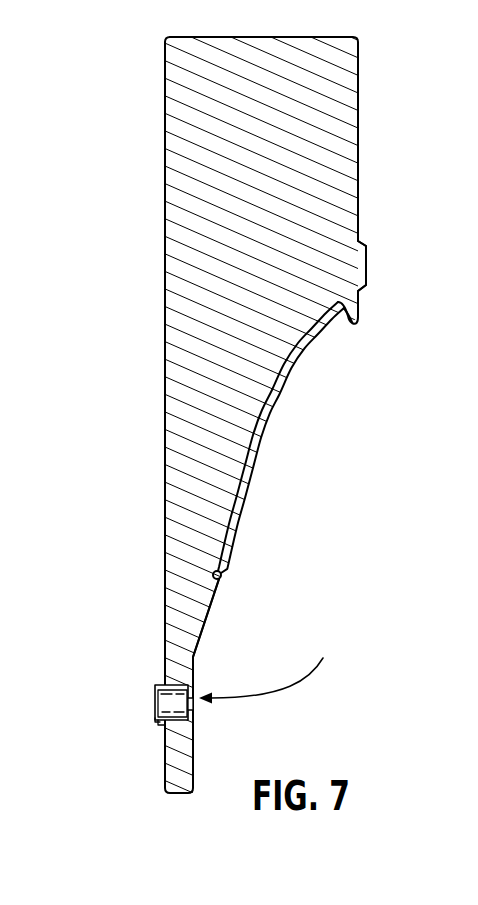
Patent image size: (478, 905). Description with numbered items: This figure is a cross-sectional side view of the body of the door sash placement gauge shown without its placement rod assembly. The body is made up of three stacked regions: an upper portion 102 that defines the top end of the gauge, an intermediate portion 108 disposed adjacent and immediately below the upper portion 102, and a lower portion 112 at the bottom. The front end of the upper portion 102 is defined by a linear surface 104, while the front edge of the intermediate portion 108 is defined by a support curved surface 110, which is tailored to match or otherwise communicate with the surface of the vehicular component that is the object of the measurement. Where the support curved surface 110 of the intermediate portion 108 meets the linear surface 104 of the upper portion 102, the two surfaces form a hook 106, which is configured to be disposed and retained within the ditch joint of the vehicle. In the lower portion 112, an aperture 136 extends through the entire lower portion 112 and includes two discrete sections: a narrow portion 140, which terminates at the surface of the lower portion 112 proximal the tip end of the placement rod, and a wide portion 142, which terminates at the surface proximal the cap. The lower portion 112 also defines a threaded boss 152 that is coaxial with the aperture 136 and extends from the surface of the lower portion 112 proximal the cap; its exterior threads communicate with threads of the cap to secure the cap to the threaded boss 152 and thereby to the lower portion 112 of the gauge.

The upper portion 102 is at (342, 99).
The linear surface 104 is at (358, 185).
The hook 106 is at (358, 317).
The intermediate portion 108 is at (166, 508).
The support curved surface 110 is at (279, 403).
The lower portion 112 is at (185, 667).
The aperture 136 is at (269, 671).
The narrow portion 140 is at (193, 705).
The wide portion 142 is at (170, 685).
The threaded boss 152 is at (160, 725).